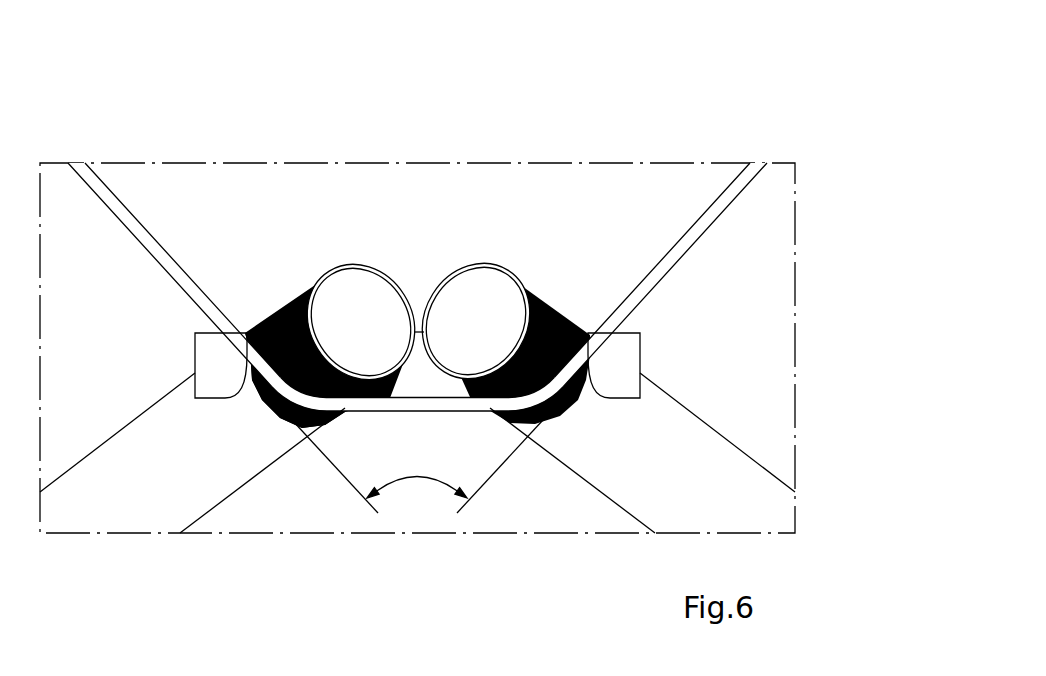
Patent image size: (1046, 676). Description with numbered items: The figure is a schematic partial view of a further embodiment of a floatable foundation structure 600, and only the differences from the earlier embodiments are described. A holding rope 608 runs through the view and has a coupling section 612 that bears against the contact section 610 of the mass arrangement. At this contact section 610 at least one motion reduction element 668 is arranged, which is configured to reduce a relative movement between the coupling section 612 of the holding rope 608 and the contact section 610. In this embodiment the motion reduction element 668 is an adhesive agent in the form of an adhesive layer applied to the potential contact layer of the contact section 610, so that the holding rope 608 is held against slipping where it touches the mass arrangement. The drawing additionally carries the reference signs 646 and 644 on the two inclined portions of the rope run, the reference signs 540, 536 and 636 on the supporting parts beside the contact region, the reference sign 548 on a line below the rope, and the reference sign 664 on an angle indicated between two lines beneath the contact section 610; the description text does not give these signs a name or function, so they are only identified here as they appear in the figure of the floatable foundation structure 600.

The floatable foundation structure 600 is at (747, 114).
The contact section 610 is at (417, 254).
The holding rope 608 is at (417, 287).
The motion reduction element 668 is at (278, 307).
The left guide section 646 is at (154, 293).
The right guide section 644 is at (683, 293).
The bearing block 540 is at (627, 360).
The support strut 536 is at (723, 448).
The support strut 636 is at (117, 448).
The coupling section 612 is at (248, 414).
The support line 548 is at (346, 443).
The angle 664 is at (418, 480).